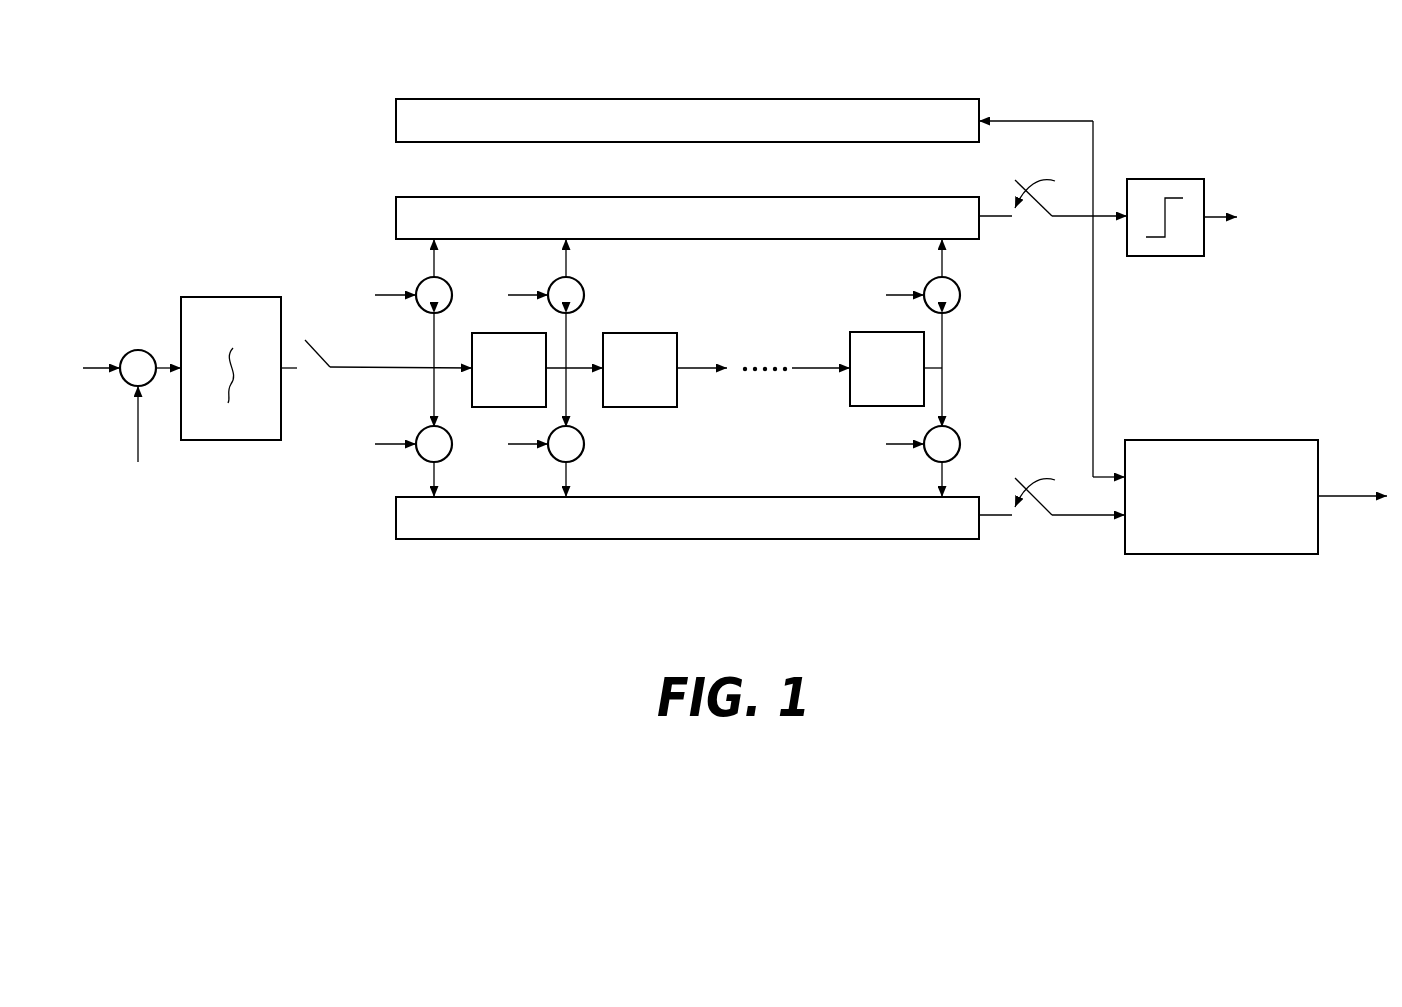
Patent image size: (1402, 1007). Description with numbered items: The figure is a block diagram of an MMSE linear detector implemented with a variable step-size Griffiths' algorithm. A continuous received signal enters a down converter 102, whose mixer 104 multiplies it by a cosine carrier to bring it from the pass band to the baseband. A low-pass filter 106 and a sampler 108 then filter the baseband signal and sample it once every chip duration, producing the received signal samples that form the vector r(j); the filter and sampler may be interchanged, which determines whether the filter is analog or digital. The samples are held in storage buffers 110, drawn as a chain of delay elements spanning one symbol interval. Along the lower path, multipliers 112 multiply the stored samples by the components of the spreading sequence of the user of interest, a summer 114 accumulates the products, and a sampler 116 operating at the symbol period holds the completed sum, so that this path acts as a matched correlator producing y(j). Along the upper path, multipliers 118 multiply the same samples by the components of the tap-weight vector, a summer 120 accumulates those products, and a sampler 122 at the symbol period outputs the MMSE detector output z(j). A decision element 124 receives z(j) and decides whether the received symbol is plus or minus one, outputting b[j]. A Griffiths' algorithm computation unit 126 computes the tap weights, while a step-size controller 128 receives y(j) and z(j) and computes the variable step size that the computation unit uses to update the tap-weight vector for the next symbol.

The down converter 102 is at (117, 437).
The mixer 104 is at (125, 352).
The low-pass filter 106 is at (231, 297).
The sampler 108 is at (322, 335).
The storage buffers 110 is at (525, 333).
The multipliers 112 is at (421, 432).
The summer 114 is at (713, 540).
The sampler 116 is at (1035, 520).
The multipliers 118 is at (447, 283).
The summer 120 is at (625, 197).
The sampler 122 is at (1027, 232).
The decision element 124 is at (1145, 179).
The Griffiths' algorithm computation unit 126 is at (812, 142).
The step-size controller 128 is at (1170, 440).